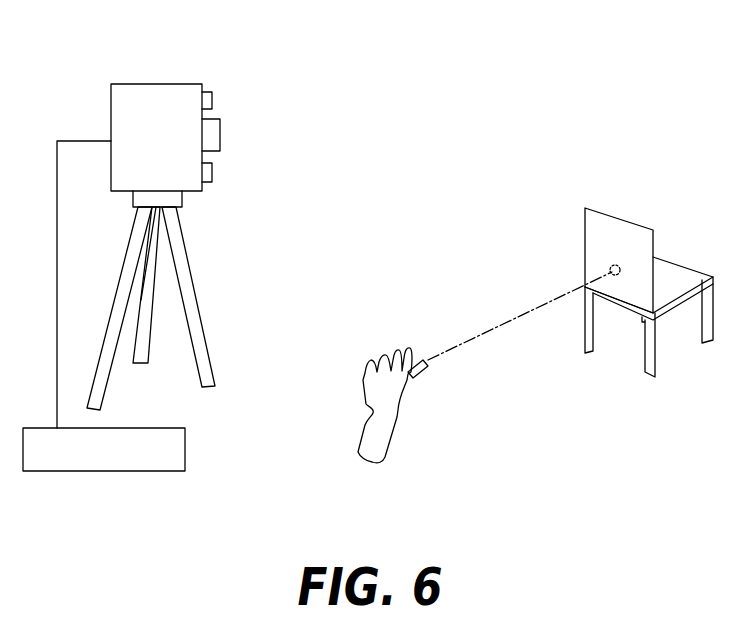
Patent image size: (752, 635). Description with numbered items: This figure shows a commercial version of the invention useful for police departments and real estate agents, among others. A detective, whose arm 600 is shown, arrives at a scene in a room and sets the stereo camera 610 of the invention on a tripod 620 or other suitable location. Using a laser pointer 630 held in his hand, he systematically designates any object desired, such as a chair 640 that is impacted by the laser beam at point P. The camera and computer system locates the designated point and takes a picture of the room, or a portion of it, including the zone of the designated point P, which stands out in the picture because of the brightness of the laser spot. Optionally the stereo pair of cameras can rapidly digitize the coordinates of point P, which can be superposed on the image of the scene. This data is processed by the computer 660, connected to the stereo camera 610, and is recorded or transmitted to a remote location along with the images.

The arm 600 is at (368, 417).
The stereo camera 610 is at (211, 87).
The tripod 620 is at (188, 265).
The laser pointer 630 is at (422, 354).
The chair 640 is at (633, 264).
The computer 660 is at (57, 471).
The point P is at (610, 268).